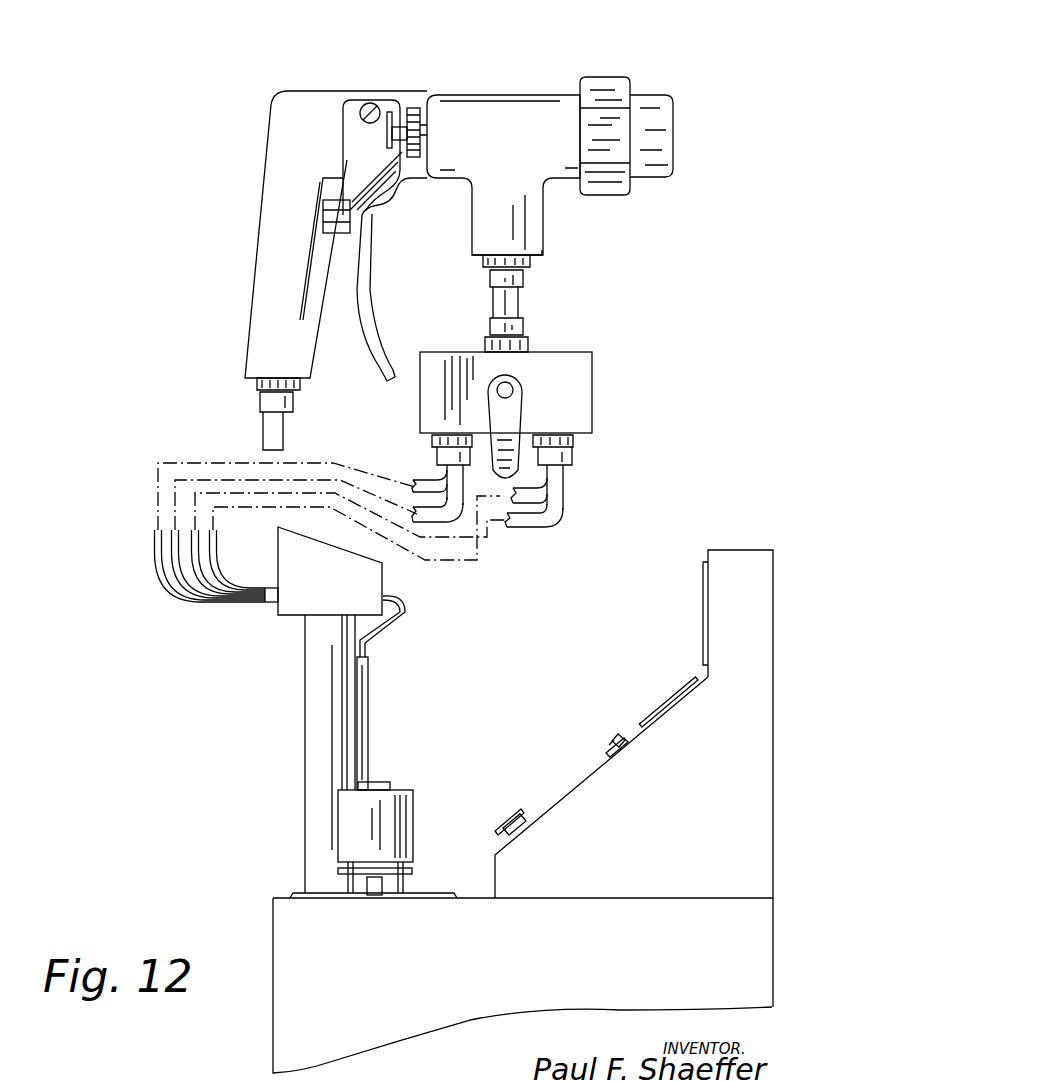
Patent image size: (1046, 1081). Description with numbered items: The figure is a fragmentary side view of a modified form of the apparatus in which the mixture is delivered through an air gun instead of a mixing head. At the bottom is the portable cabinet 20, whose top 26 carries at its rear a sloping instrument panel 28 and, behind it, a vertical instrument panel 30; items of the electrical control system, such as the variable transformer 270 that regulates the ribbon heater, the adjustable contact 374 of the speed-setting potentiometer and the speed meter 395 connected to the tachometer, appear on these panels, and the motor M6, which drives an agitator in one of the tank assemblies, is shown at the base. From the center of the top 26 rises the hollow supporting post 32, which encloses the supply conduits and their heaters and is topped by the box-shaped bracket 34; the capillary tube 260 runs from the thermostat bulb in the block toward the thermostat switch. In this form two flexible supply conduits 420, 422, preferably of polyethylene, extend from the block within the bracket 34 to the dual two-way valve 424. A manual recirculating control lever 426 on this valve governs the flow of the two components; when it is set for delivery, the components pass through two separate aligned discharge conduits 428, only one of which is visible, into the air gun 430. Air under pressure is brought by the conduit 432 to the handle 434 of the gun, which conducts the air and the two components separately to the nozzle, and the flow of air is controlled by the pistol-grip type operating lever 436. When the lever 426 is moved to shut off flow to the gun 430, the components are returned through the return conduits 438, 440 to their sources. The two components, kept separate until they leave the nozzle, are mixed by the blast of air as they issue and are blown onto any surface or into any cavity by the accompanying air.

The portable cabinet 20 is at (273, 1040).
The top 26 is at (283, 895).
The sloping instrument panel 28 is at (572, 790).
The vertical instrument panel 30 is at (705, 560).
The hollow supporting post 32 is at (315, 721).
The box-shaped bracket 34 is at (370, 580).
The motor M6 is at (393, 800).
The capillary tube 260 is at (402, 618).
The variable transformer 270 is at (510, 822).
The adjustable contact 374 is at (612, 740).
The speed meter 395 is at (672, 700).
The supply conduit 420 is at (172, 548).
The supply conduit 422 is at (200, 540).
The dual two-way valve 424 is at (575, 370).
The manual recirculating control lever 426 is at (512, 418).
The discharge conduit 428 is at (520, 300).
The air gun 430 is at (505, 100).
The conduit 432 is at (270, 423).
The handle 434 is at (282, 245).
The operating lever 436 is at (365, 267).
The return conduit 438 is at (215, 550).
The return conduit 440 is at (165, 570).